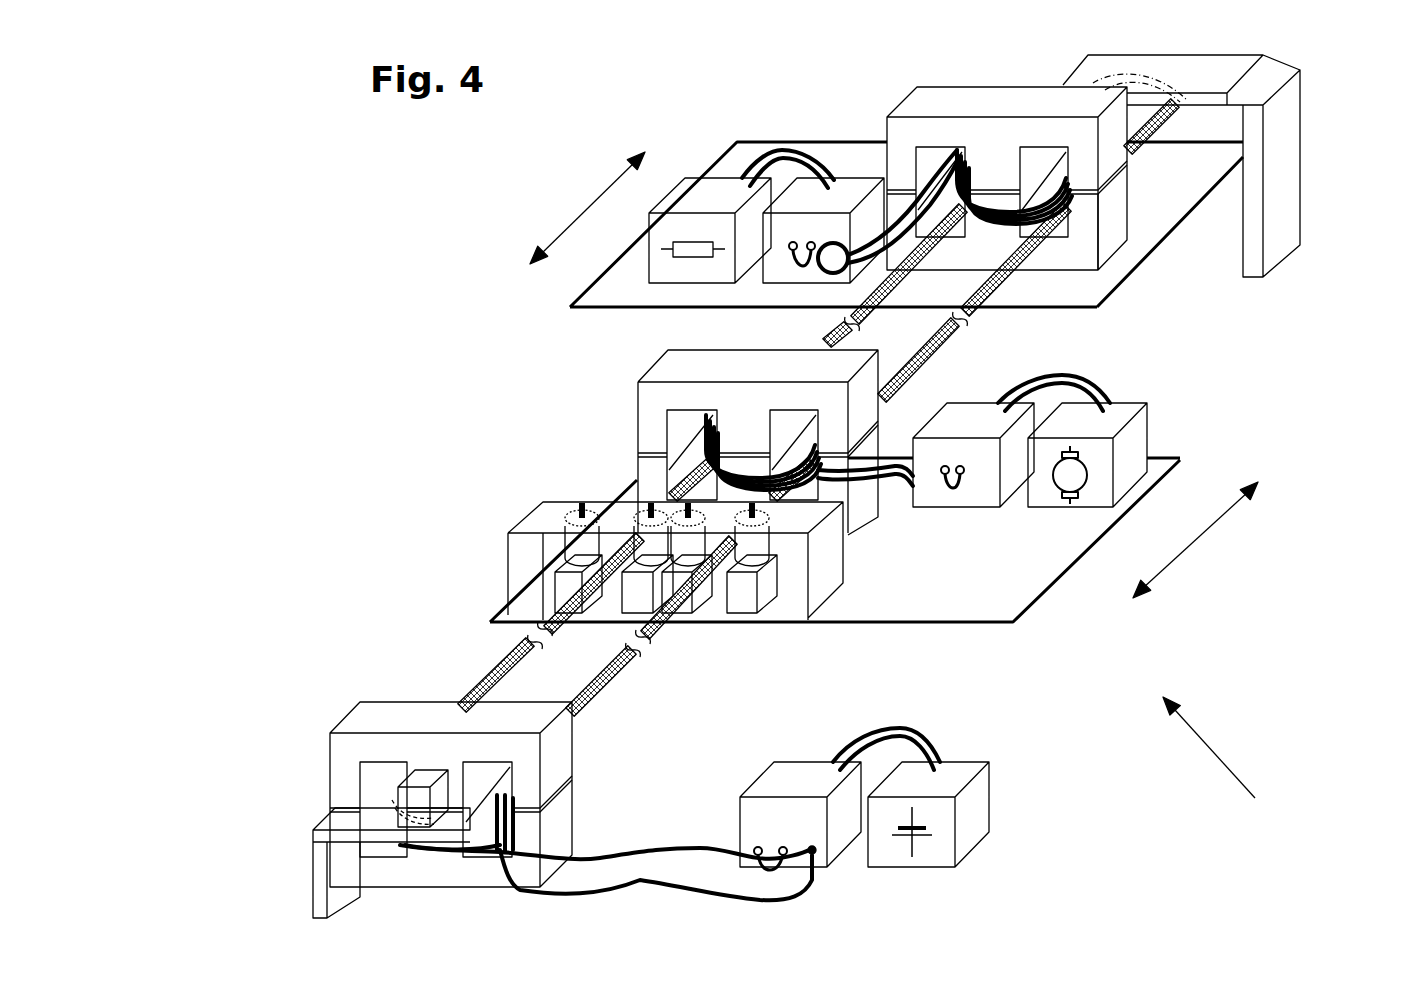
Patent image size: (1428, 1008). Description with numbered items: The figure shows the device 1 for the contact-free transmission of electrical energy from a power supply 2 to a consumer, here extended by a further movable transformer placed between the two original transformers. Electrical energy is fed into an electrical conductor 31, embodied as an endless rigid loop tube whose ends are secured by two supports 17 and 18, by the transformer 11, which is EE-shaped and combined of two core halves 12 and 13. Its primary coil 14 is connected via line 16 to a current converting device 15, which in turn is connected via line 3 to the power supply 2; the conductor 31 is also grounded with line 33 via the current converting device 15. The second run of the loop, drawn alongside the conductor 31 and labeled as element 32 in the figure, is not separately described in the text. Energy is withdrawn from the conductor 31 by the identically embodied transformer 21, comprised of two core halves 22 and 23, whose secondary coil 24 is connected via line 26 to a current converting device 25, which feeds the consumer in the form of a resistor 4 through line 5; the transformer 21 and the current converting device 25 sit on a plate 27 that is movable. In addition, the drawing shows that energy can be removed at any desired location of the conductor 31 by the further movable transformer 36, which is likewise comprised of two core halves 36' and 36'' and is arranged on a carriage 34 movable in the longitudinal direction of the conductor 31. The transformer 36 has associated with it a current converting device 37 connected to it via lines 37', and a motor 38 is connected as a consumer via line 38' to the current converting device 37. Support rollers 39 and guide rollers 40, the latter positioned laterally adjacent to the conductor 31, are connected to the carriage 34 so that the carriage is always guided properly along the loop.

The device 1 is at (1220, 766).
The power supply 2 is at (993, 793).
The line 3 is at (927, 730).
The resistor 4 is at (728, 176).
The line 5 is at (775, 152).
The transformer 11 is at (575, 803).
The core half 12 is at (567, 833).
The core half 13 is at (567, 750).
The primary coil 14 is at (440, 853).
The current converting device 15 is at (782, 757).
The line 16 is at (670, 843).
The support 17 is at (320, 830).
The support 18 is at (1307, 95).
The transformer 21 is at (1130, 220).
The core half 22 is at (1117, 200).
The core half 23 is at (955, 97).
The secondary coil 24 is at (1068, 222).
The current converting device 25 is at (862, 168).
The line 26 is at (822, 273).
The plate 27 is at (573, 298).
The electrical conductor 31 is at (963, 318).
The threaded rod 32 is at (1027, 240).
The line 33 is at (817, 877).
The carriage 34 is at (1065, 577).
The movable transformer 36 is at (721, 442).
The core half 36' is at (685, 447).
The core half 36'' is at (704, 385).
The current converting device 37 is at (973, 426).
The lines 37' is at (835, 498).
The motor 38 is at (1134, 455).
The line 38' is at (1109, 392).
The support rollers 39 is at (718, 583).
The guide rollers 40 is at (757, 540).